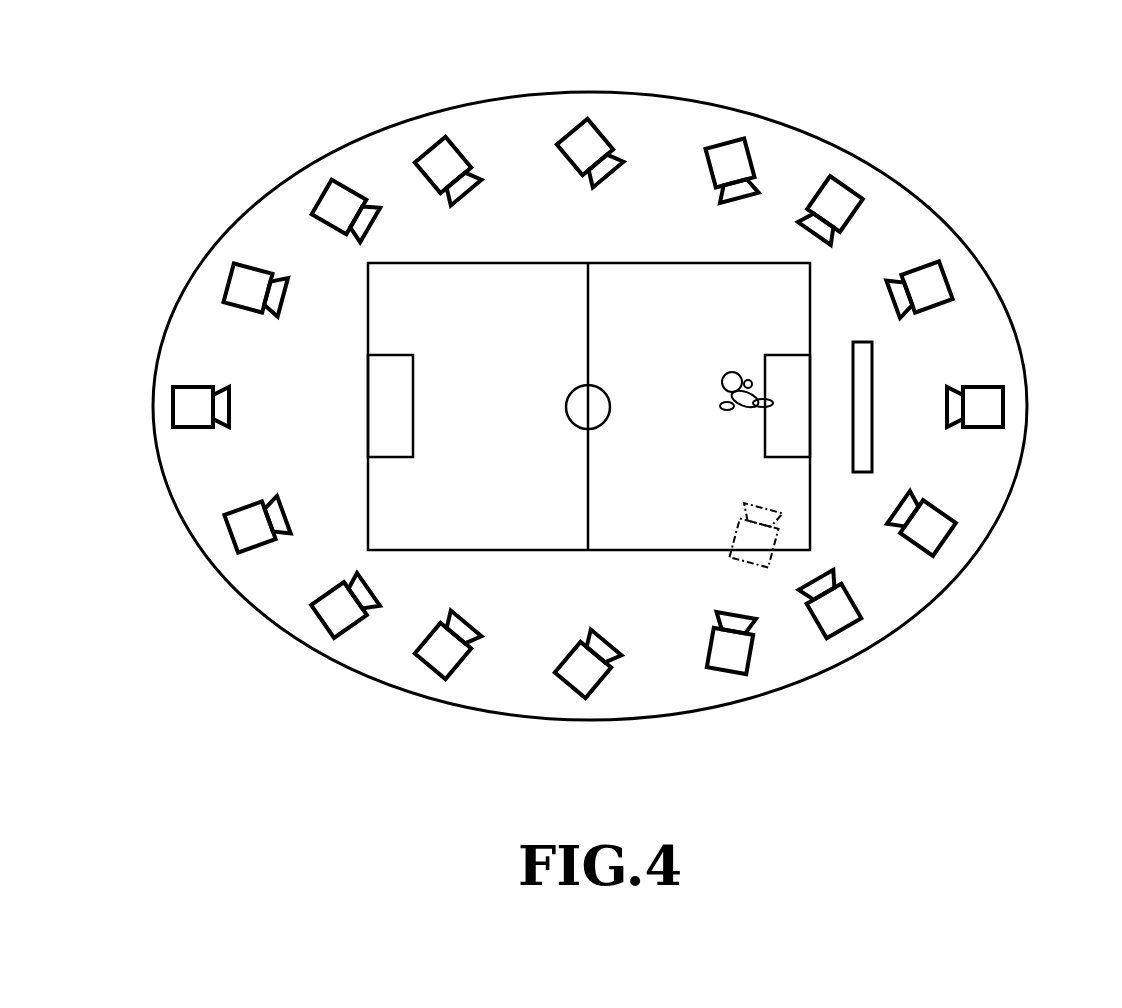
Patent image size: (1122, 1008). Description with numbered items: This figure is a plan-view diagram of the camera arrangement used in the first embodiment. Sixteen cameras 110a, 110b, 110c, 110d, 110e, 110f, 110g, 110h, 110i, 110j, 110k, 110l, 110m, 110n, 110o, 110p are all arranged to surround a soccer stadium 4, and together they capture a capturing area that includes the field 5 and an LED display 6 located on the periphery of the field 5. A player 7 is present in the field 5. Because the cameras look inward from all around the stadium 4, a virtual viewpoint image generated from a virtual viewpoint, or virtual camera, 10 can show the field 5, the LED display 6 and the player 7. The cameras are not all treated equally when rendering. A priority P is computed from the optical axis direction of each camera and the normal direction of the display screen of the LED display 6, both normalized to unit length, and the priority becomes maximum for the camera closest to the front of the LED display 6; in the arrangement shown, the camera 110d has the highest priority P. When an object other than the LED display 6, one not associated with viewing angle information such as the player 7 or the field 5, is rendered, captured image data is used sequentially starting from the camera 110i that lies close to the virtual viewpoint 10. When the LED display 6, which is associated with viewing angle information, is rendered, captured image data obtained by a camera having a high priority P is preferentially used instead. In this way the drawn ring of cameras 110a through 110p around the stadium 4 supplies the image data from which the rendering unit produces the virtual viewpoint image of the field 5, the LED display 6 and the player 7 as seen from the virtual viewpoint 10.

The soccer stadium 4 is at (925, 190).
The field 5 is at (612, 264).
The LED display 6 is at (872, 383).
The player 7 is at (735, 372).
The virtual viewpoint 10 is at (742, 520).
The camera 110a is at (443, 138).
The camera 110b is at (335, 182).
The camera 110c is at (238, 263).
The camera 110d is at (173, 405).
The camera 110e is at (236, 552).
The camera 110f is at (334, 638).
The camera 110g is at (446, 680).
The camera 110h is at (590, 697).
The camera 110i is at (742, 673).
The camera 110j is at (845, 636).
The camera 110k is at (950, 545).
The camera 110l is at (1003, 410).
The camera 110m is at (953, 292).
The camera 110n is at (842, 186).
The camera 110o is at (742, 140).
The camera 110p is at (590, 118).